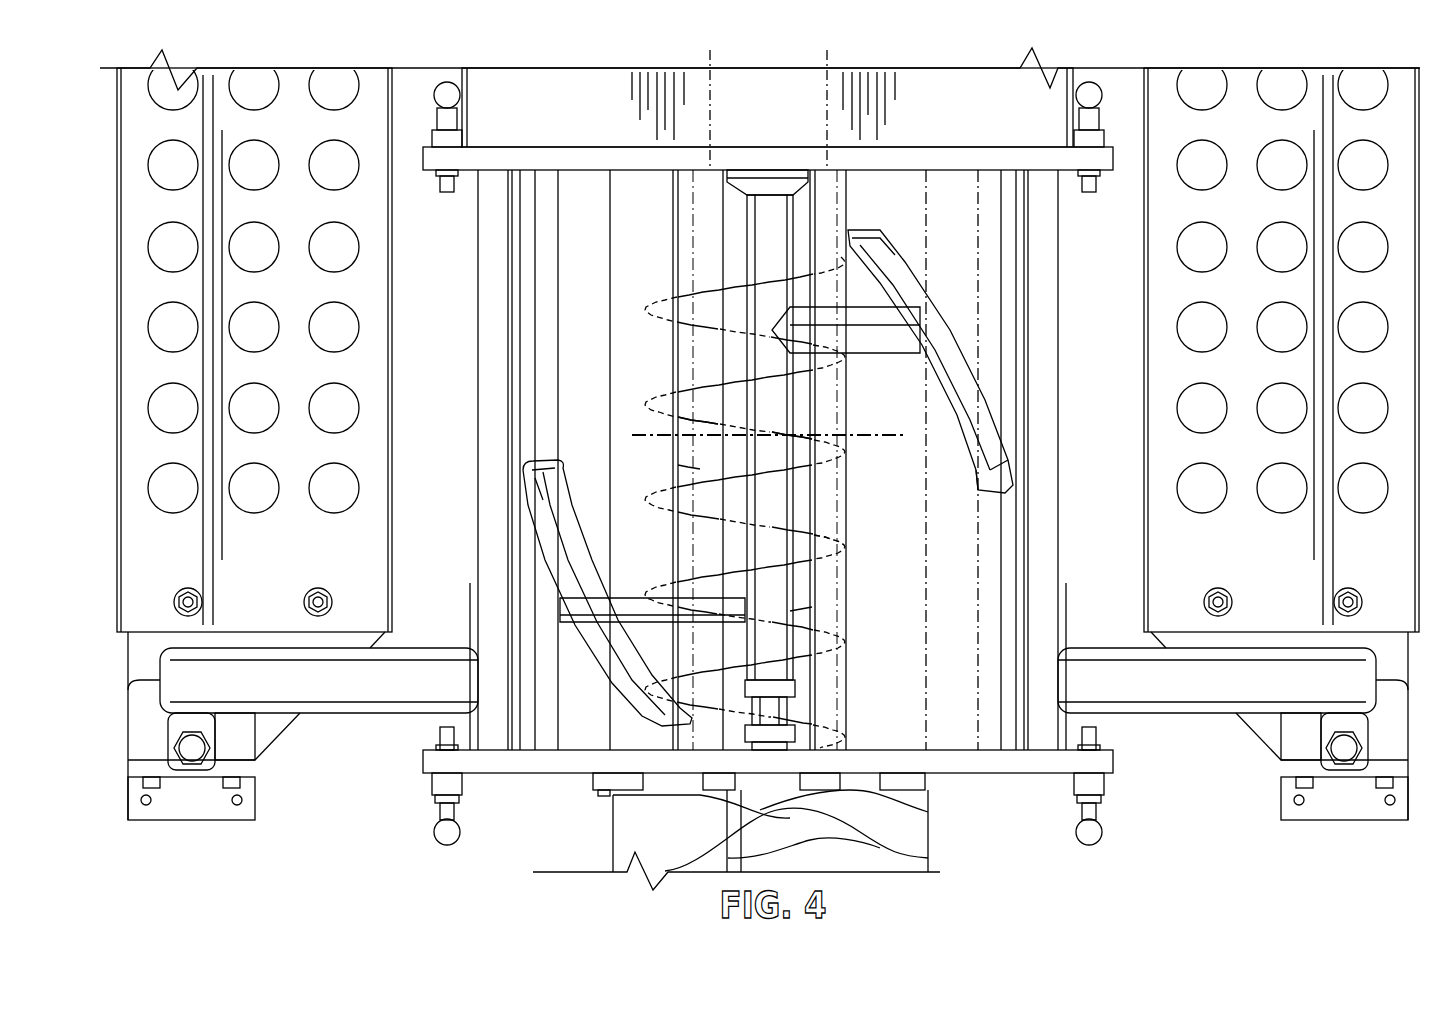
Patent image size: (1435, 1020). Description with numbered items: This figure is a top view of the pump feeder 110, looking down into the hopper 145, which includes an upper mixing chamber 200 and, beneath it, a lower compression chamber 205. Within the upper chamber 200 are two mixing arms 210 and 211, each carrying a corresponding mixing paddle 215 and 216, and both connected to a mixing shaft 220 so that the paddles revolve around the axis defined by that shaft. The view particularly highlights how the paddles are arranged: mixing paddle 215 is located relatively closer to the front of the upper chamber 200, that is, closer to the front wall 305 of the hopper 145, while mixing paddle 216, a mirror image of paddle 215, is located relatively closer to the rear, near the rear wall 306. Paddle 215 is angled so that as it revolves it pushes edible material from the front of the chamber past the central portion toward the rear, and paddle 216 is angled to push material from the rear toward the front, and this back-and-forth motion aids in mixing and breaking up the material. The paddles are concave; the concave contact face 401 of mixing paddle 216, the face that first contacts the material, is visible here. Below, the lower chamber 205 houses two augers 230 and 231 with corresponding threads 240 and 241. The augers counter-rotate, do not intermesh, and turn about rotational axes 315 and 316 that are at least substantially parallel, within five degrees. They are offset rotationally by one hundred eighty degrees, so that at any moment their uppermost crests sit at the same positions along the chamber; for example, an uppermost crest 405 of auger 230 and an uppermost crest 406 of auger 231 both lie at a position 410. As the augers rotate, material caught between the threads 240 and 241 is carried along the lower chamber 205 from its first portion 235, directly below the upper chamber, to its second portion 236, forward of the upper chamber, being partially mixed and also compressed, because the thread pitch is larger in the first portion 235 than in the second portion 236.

The pump feeder 110 is at (383, 799).
The hopper 145 is at (482, 222).
The upper mixing chamber 200 is at (528, 330).
The lower compression chamber 205 is at (683, 220).
The first portion of lower chamber 235 is at (688, 492).
The mixing arm 210 is at (635, 632).
The mixing arm 211 is at (878, 318).
The mixing paddle 215 is at (588, 573).
The mixing paddle 216 is at (945, 322).
The mixing shaft 220 is at (765, 650).
The auger 230 is at (712, 509).
The auger 231 is at (835, 614).
The thread 240 is at (687, 457).
The thread 241 is at (848, 580).
The second portion of lower chamber 236 is at (630, 810).
The front wall 305 is at (983, 768).
The rear wall 306 is at (915, 160).
The rotational axis 315 is at (708, 56).
The rotational axis 316 is at (830, 56).
The contact face 401 is at (972, 390).
The uppermost crest 405 is at (690, 432).
The uppermost crest 406 is at (835, 435).
The position 410 is at (648, 435).